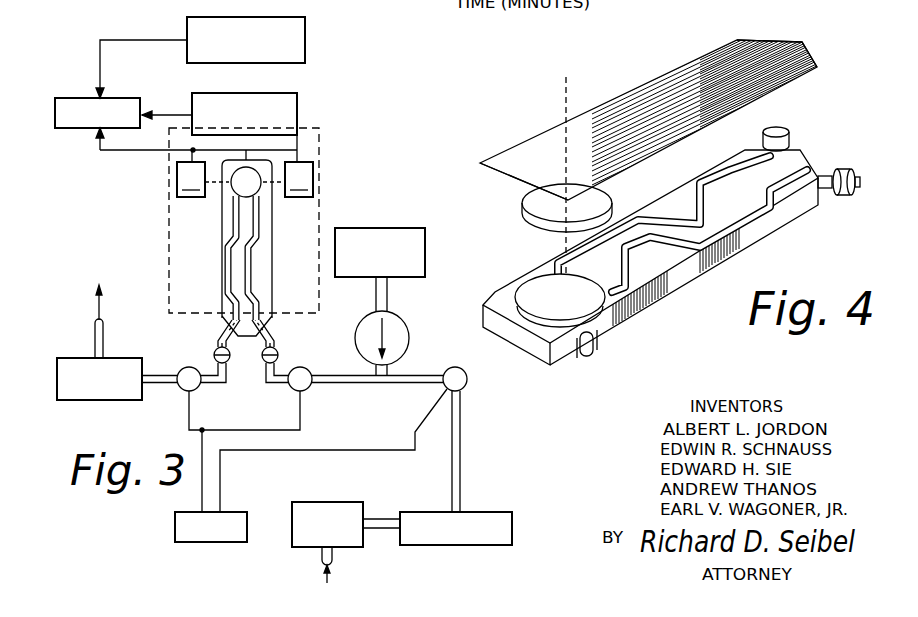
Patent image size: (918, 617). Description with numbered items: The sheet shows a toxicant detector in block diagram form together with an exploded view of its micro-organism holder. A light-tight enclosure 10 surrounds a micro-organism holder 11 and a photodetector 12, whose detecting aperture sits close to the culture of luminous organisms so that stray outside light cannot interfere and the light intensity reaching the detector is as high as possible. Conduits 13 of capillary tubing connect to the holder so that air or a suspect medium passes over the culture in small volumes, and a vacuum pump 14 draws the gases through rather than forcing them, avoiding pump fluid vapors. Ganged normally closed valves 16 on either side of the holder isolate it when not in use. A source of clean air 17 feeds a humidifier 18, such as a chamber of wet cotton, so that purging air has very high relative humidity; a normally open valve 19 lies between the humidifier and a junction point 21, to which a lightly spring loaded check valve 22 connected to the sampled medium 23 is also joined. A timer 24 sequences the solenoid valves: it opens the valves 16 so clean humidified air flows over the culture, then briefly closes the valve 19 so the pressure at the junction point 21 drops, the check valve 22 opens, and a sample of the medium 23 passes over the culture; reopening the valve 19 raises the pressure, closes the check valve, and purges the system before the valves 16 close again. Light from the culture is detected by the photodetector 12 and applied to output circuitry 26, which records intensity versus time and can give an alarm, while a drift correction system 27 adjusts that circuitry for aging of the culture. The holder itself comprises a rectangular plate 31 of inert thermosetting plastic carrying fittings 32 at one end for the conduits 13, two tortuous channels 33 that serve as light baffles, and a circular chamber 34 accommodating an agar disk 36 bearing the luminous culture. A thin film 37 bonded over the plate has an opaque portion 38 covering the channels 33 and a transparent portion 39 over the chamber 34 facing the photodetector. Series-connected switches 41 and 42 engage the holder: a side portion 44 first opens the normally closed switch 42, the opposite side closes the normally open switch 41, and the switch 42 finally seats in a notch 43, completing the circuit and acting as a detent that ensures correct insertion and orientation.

In FIG. 3, the light-tight enclosure 10 is at (167, 225).
In FIG. 3, the micro-organism holder 11 is at (219, 237).
In FIG. 4, the micro-organism holder 11 is at (671, 266).
In FIG. 3, the photodetector 12 is at (297, 105).
In FIG. 3, the conduits 13 is at (262, 380).
In FIG. 3, the vacuum pump 14 is at (80, 357).
In FIG. 3, the normally closed valves 16 is at (182, 391).
In FIG. 3, the source of clean air 17 is at (312, 547).
In FIG. 3, the humidifier 18 is at (435, 546).
In FIG. 3, the normally open valve 19 is at (448, 369).
In FIG. 3, the junction point 21 is at (378, 386).
In FIG. 3, the check valve 22 is at (355, 336).
In FIG. 3, the sampled medium 23 is at (386, 228).
In FIG. 3, the timer 24 is at (210, 542).
In FIG. 3, the output circuitry 26 is at (83, 97).
In FIG. 3, the drift correction system 27 is at (194, 17).
In FIG. 4, the rectangular plate 31 is at (704, 182).
In FIG. 3, the fittings 32 is at (230, 355).
In FIG. 4, the fittings 32 is at (838, 167).
In FIG. 4, the channels 33 is at (652, 236).
In FIG. 4, the chamber 34 is at (585, 305).
In FIG. 4, the agar disk 36 is at (522, 208).
In FIG. 4, the thin film 37 is at (694, 56).
In FIG. 4, the opaque portion 38 is at (650, 86).
In FIG. 4, the transparent portion 39 is at (511, 150).
In FIG. 3, the switch 41 is at (288, 179).
In FIG. 3, the switch 42 is at (203, 179).
In FIG. 3, the notch 43 is at (233, 186).
In FIG. 4, the notch 43 is at (586, 352).
In FIG. 3, the side portion 44 is at (231, 178).
In FIG. 4, the side portion 44 is at (582, 363).